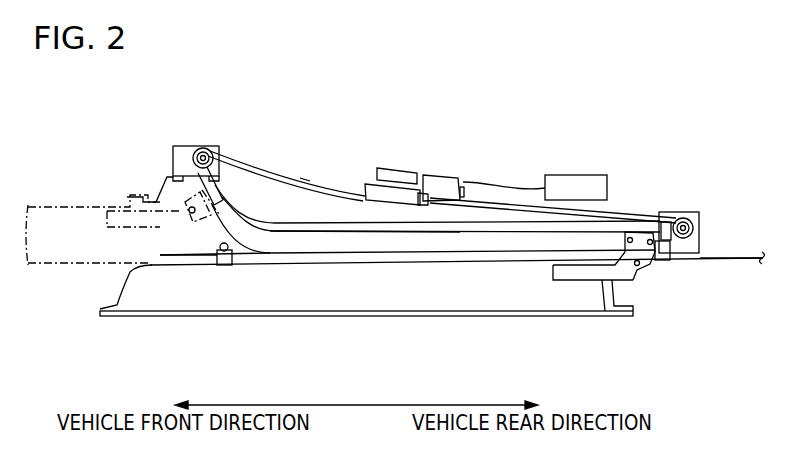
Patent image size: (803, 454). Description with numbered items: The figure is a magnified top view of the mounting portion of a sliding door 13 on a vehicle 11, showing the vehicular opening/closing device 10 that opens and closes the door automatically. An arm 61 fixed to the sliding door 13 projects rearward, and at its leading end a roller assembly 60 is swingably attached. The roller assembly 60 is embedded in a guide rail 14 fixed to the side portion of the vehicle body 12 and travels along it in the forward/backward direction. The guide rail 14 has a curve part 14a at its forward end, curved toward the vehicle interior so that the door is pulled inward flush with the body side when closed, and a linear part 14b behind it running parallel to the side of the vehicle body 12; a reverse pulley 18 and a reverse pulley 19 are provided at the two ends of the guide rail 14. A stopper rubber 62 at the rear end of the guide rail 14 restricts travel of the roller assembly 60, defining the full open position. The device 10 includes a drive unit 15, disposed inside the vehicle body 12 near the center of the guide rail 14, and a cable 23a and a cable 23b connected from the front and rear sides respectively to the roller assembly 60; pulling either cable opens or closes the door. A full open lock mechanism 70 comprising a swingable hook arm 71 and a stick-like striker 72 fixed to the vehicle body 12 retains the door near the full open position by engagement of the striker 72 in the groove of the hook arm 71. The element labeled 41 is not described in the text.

The vehicular opening/closing device 10 is at (444, 168).
The vehicle 11 is at (725, 266).
The vehicle body 12 is at (690, 264).
The sliding door 13 is at (367, 311).
The guide rail 14 is at (253, 211).
The curve part 14a is at (235, 210).
The linear part 14b is at (461, 233).
The drive unit 15 is at (401, 165).
The reverse pulley 18 is at (203, 147).
The reverse pulley 19 is at (686, 218).
The cable 23a is at (317, 182).
The cable 23b is at (637, 213).
The control unit 41 is at (577, 185).
The roller assembly 60 is at (647, 270).
The arm 61 is at (580, 275).
The stopper rubber 62 is at (665, 260).
The full open lock mechanism 70 is at (204, 263).
The hook arm 71 is at (223, 265).
The striker 72 is at (192, 236).